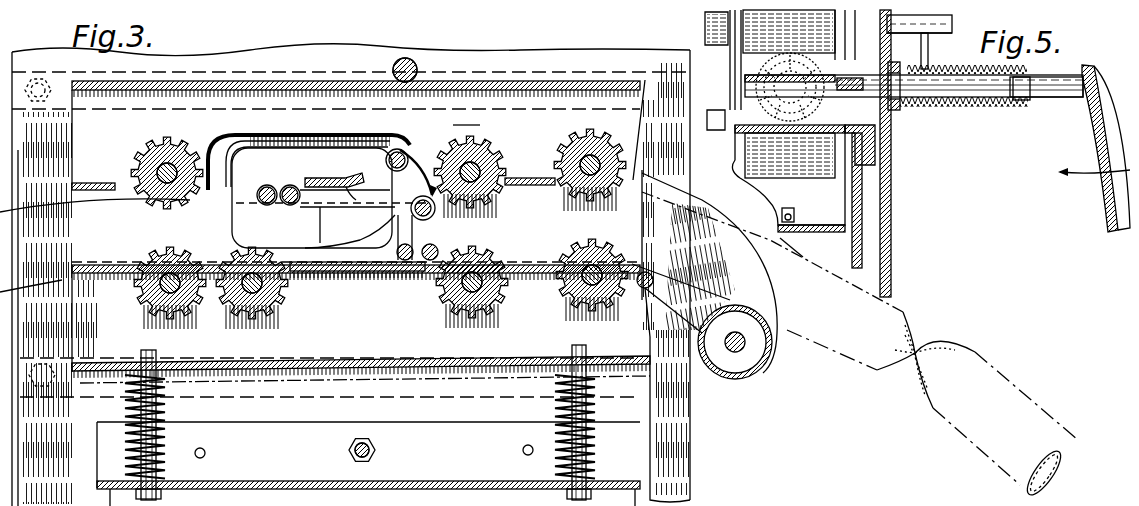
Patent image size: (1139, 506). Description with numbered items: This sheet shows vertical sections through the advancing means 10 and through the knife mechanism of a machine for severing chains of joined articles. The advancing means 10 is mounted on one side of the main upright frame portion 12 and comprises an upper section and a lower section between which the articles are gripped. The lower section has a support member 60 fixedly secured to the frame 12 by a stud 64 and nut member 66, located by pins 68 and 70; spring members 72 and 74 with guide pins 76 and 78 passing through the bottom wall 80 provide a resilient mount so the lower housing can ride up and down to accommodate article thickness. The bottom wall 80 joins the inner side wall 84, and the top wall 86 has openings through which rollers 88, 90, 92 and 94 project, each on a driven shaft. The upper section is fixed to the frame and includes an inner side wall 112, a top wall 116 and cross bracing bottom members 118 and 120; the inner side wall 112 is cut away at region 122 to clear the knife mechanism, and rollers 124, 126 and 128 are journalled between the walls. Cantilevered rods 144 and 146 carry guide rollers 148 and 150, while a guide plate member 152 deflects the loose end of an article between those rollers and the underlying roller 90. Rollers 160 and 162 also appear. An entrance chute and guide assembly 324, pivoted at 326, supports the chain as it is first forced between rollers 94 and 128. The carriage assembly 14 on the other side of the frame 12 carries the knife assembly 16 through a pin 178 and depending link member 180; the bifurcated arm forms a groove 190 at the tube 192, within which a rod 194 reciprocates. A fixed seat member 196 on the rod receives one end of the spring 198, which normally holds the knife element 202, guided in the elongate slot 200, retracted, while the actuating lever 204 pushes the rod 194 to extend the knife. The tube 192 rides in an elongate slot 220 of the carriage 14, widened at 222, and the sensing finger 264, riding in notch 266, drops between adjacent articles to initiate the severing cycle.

In FIG. 3, the advancing means 10 is at (334, 75).
In FIG. 5, the advancing means 10 is at (840, 240).
In FIG. 3, the main upright frame portion 12 is at (693, 419).
In FIG. 5, the main upright frame portion 12 is at (862, 238).
In FIG. 3, the carriage assembly 14 is at (318, 241).
In FIG. 5, the carriage assembly 14 is at (896, 190).
In FIG. 5, the knife assembly 16 is at (940, 72).
In FIG. 3, the support member 60 is at (316, 484).
In FIG. 3, the stud 64 is at (370, 448).
In FIG. 3, the nut member 66 is at (349, 447).
In FIG. 3, the locating pin 68 is at (204, 449).
In FIG. 3, the locating pin 70 is at (526, 445).
In FIG. 3, the spring member 72 is at (172, 419).
In FIG. 3, the spring member 74 is at (600, 413).
In FIG. 3, the guide pin 76 is at (172, 441).
In FIG. 3, the guide pin 78 is at (572, 437).
In FIG. 3, the bottom wall 80 is at (304, 362).
In FIG. 3, the inner side wall 84 is at (228, 347).
In FIG. 3, the top wall 86 is at (350, 280).
In FIG. 3, the roller 88 is at (190, 312).
In FIG. 3, the roller 90 is at (282, 310).
In FIG. 5, the roller 90 is at (810, 178).
In FIG. 3, the roller 92 is at (445, 312).
In FIG. 3, the roller 94 is at (562, 300).
In FIG. 3, the inner side wall 112 is at (466, 117).
In FIG. 3, the top wall 116 is at (285, 81).
In FIG. 3, the cross bracing bottom member 118 is at (72, 186).
In FIG. 3, the cross bracing bottom member 120 is at (530, 176).
In FIG. 3, the cutaway region 122 is at (362, 138).
In FIG. 3, the roller 124 is at (192, 147).
In FIG. 5, the roller 124 is at (760, 30).
In FIG. 3, the roller 126 is at (482, 139).
In FIG. 3, the roller 128 is at (628, 150).
In FIG. 3, the rod 144 is at (290, 186).
In FIG. 3, the rod 146 is at (290, 204).
In FIG. 3, the roller 148 is at (262, 188).
In FIG. 3, the roller 150 is at (300, 180).
In FIG. 3, the guide plate member 152 is at (352, 196).
In FIG. 3, the roller 160 is at (414, 60).
In FIG. 3, the roller sleeve 162 is at (402, 58).
In FIG. 5, the pin 178 is at (952, 22).
In FIG. 5, the link member 180 is at (928, 50).
In FIG. 5, the groove 190 is at (900, 108).
In FIG. 3, the tube 192 is at (400, 148).
In FIG. 5, the tube 192 is at (968, 106).
In FIG. 5, the rod 194 is at (1065, 70).
In FIG. 5, the abutment or seat member 196 is at (1030, 100).
In FIG. 5, the spring 198 is at (984, 71).
In FIG. 5, the elongate slot 200 is at (860, 78).
In FIG. 3, the knife element 202 is at (442, 157).
In FIG. 5, the knife element 202 is at (770, 108).
In FIG. 5, the actuating lever 204 is at (1110, 195).
In FIG. 3, the elongate slot 220 is at (411, 207).
In FIG. 5, the elongate slot 220 is at (885, 118).
In FIG. 3, the widened portion 222 is at (438, 250).
In FIG. 3, the sensing finger 264 is at (420, 245).
In FIG. 3, the notch 266 is at (396, 250).
In FIG. 3, the entrance chute and guide assembly 324 is at (757, 380).
In FIG. 3, the pivot 326 is at (649, 270).